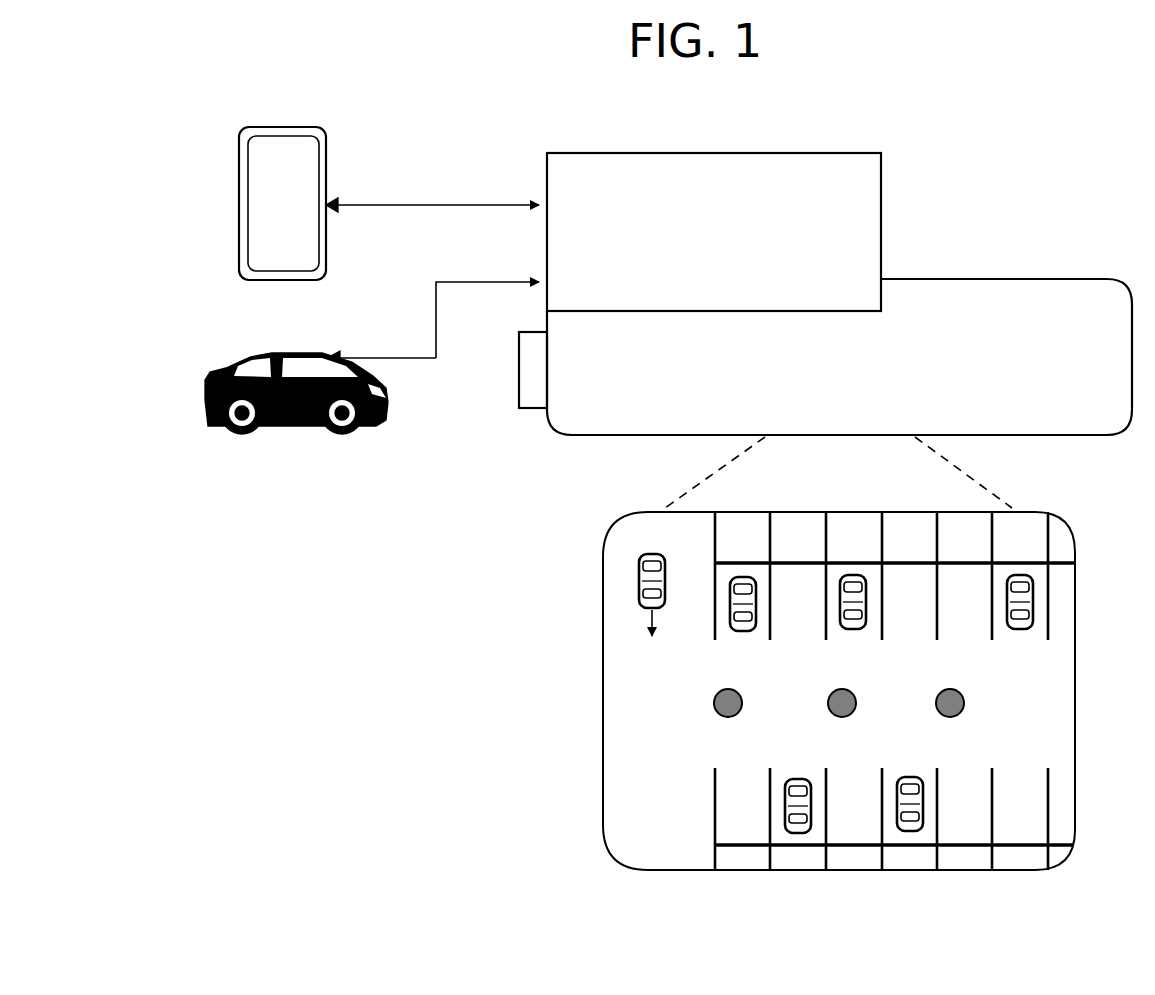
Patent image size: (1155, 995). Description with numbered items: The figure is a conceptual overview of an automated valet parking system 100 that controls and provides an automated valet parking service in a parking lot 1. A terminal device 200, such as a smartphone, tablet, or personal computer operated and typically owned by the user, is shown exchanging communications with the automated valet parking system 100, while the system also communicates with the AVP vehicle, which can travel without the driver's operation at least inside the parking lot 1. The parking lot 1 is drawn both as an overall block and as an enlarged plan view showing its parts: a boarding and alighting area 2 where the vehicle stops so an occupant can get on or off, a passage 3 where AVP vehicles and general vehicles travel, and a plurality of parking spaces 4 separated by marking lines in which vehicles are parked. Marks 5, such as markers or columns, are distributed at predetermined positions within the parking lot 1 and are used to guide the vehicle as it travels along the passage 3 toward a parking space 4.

The parking lot 1 is at (995, 279).
The boarding and alighting area 2 is at (531, 412).
The passage 3 is at (667, 709).
The parking space 4 is at (742, 780).
The mark 5 is at (737, 690).
The automated valet parking system 100 is at (606, 151).
The terminal device 200 is at (298, 127).